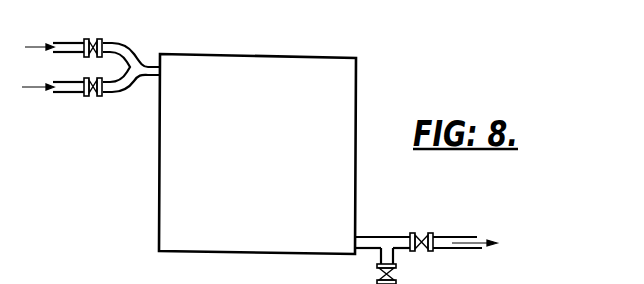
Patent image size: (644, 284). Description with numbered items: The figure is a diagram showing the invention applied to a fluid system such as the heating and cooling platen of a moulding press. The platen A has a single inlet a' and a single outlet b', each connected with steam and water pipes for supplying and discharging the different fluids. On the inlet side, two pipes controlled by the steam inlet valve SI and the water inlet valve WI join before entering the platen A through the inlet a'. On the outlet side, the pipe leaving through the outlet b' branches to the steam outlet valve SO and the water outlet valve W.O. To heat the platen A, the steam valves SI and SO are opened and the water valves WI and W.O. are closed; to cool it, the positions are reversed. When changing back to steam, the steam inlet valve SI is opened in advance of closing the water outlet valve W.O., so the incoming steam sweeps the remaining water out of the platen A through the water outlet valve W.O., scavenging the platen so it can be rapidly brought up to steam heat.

The platen A is at (257, 154).
The single inlet a' is at (131, 78).
The steam inlet valve SI is at (90, 45).
The water inlet valve WI is at (95, 92).
The single outlet b' is at (382, 231).
The steam outlet valve SO is at (421, 241).
The water outlet valve W.O. is at (397, 274).